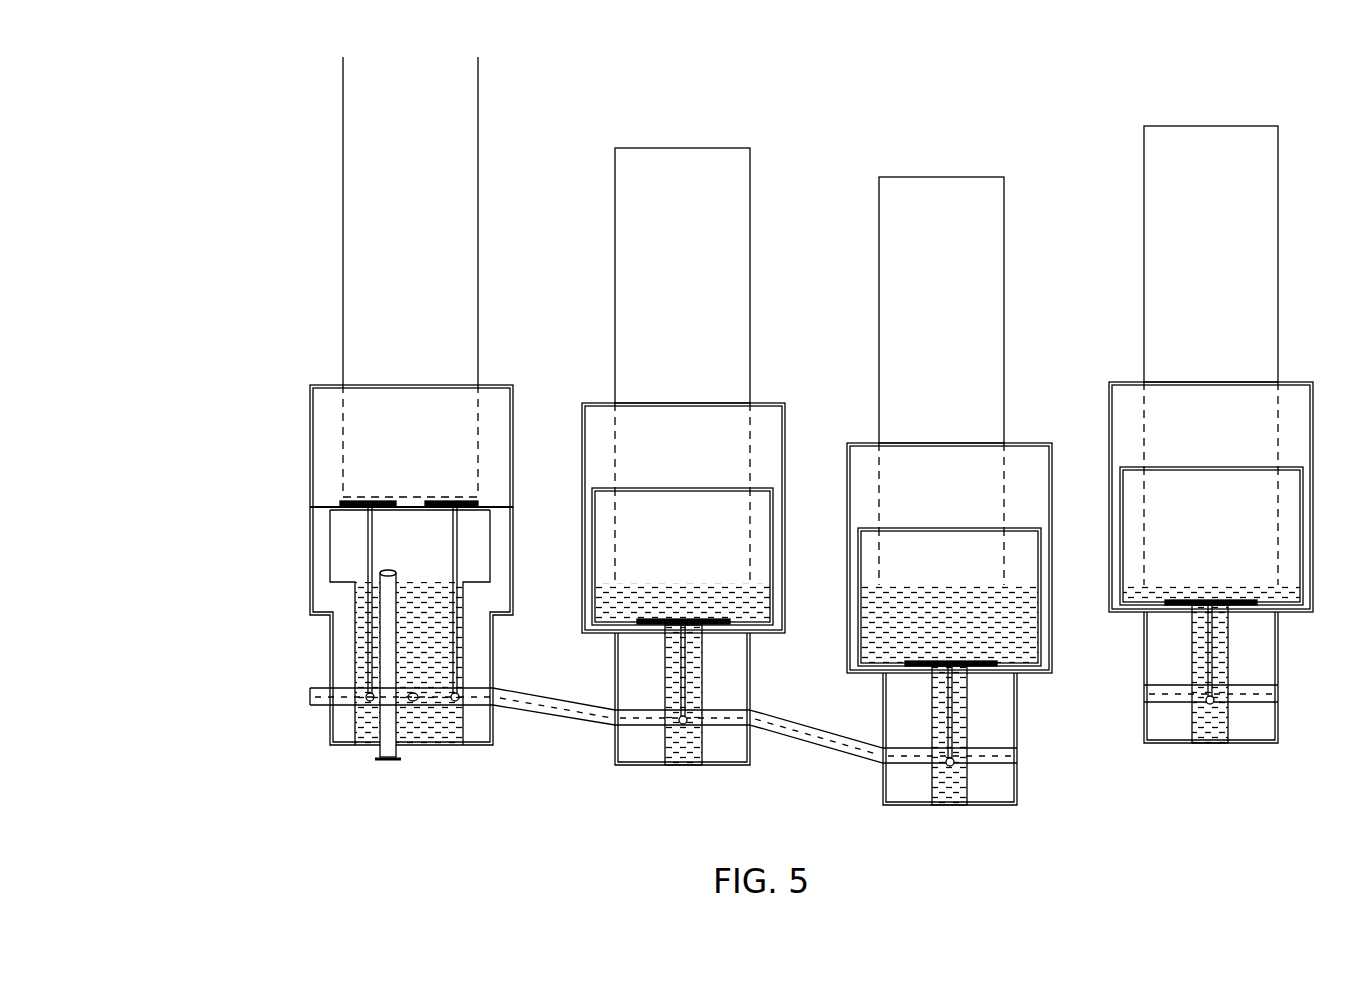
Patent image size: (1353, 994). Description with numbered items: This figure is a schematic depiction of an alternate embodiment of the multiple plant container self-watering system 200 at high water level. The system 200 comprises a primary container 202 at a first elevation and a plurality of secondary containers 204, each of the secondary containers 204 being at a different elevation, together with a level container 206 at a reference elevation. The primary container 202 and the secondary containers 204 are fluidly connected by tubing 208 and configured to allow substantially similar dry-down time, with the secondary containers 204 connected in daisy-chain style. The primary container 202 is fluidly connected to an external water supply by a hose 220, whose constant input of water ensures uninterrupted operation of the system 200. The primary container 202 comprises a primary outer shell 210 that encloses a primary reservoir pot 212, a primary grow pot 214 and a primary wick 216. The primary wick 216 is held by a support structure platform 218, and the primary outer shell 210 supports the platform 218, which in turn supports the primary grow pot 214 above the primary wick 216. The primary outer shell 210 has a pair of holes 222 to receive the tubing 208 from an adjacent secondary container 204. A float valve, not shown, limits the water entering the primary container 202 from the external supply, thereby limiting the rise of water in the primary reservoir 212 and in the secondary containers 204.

The multiple plant container self-watering system 200 is at (846, 112).
The primary container 202 is at (350, 435).
The secondary containers 204 is at (690, 133).
The level container 206 is at (1238, 113).
The tubing 208 is at (313, 695).
The primary outer shell 210 is at (310, 430).
The primary reservoir pot 212 is at (355, 725).
The primary grow pot 214 is at (343, 255).
The primary wick 216 is at (453, 567).
The support structure platform 218 is at (318, 507).
The hose 220 is at (383, 752).
The holes 222 is at (495, 700).